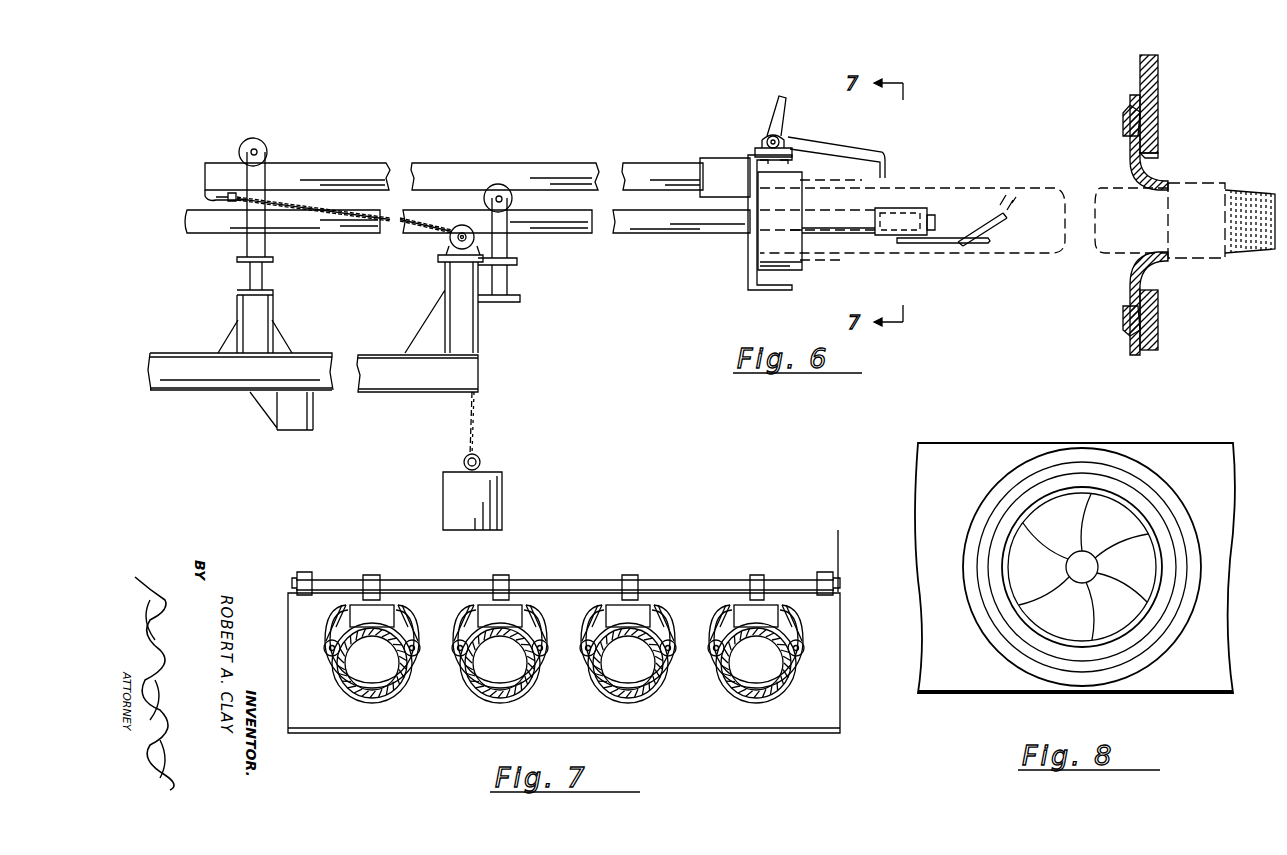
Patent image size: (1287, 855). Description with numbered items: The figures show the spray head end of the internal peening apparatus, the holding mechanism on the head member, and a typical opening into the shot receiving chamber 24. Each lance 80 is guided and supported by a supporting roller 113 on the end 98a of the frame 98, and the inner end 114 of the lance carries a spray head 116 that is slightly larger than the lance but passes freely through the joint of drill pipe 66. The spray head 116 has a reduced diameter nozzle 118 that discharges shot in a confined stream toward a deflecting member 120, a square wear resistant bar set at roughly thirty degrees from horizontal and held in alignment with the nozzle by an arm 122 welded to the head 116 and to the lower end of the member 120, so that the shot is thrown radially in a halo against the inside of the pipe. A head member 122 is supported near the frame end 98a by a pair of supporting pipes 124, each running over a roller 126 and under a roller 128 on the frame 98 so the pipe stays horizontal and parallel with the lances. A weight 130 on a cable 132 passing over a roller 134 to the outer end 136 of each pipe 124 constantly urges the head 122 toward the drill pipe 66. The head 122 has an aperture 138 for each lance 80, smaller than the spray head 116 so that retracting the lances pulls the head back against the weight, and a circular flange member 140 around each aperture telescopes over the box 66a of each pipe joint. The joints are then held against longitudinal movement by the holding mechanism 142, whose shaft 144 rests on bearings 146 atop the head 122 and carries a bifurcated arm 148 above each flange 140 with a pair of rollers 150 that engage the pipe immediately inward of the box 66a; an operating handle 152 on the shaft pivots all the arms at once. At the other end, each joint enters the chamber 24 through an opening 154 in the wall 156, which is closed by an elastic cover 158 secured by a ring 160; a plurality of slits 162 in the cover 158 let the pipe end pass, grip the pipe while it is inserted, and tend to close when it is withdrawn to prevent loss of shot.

In FIG. 6, the shot receiving chamber 24 is at (1216, 113).
In FIG. 6, the drill pipe 66 is at (1060, 200).
In FIG. 7, the drill pipe 66 is at (345, 704).
In FIG. 6, the box 66a is at (815, 255).
In FIG. 7, the box 66a is at (340, 686).
In FIG. 6, the lance 80 is at (630, 226).
In FIG. 6, the frame 98 is at (234, 378).
In FIG. 6, the end of the frame 98a is at (506, 287).
In FIG. 6, the supporting roller 113 is at (460, 225).
In FIG. 6, the inner end of the lance 114 is at (838, 228).
In FIG. 6, the spray head 116 is at (906, 208).
In FIG. 6, the nozzle 118 is at (934, 218).
In FIG. 6, the deflecting member 120 is at (1000, 226).
In FIG. 6, the head member 122 is at (748, 160).
In FIG. 7, the head member 122 is at (838, 616).
In FIG. 6, the supporting pipe 124 is at (580, 163).
In FIG. 6, the roller 126 is at (503, 185).
In FIG. 6, the roller 128 is at (262, 147).
In FIG. 6, the weight 130 is at (489, 474).
In FIG. 6, the cable 132 is at (479, 418).
In FIG. 6, the roller 134 is at (446, 238).
In FIG. 6, the outer end of the pipe 136 is at (206, 196).
In FIG. 6, the aperture 138 is at (752, 242).
In FIG. 6, the circular flange member 140 is at (766, 259).
In FIG. 6, the holding mechanism 142 is at (877, 152).
In FIG. 7, the holding mechanism 142 is at (687, 573).
In FIG. 7, the shaft 144 is at (580, 580).
In FIG. 7, the bearing 146 is at (308, 572).
In FIG. 7, the bifurcated arm 148 is at (504, 576).
In FIG. 7, the roller 150 is at (418, 650).
In FIG. 7, the operating handle 152 is at (842, 552).
In FIG. 6, the opening 154 is at (1158, 155).
In FIG. 6, the wall 156 is at (1158, 82).
In FIG. 6, the elastic cover 158 is at (1130, 144).
In FIG. 8, the elastic cover 158 is at (1137, 573).
In FIG. 6, the ring 160 is at (1130, 110).
In FIG. 8, the slit 162 is at (1081, 520).